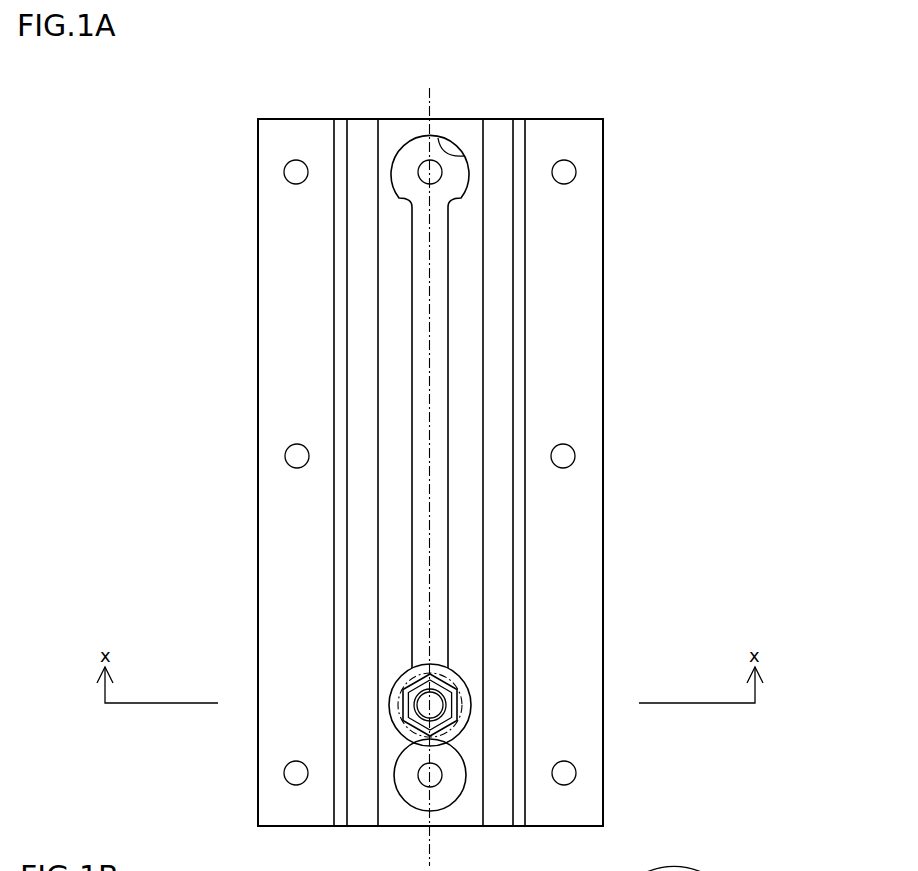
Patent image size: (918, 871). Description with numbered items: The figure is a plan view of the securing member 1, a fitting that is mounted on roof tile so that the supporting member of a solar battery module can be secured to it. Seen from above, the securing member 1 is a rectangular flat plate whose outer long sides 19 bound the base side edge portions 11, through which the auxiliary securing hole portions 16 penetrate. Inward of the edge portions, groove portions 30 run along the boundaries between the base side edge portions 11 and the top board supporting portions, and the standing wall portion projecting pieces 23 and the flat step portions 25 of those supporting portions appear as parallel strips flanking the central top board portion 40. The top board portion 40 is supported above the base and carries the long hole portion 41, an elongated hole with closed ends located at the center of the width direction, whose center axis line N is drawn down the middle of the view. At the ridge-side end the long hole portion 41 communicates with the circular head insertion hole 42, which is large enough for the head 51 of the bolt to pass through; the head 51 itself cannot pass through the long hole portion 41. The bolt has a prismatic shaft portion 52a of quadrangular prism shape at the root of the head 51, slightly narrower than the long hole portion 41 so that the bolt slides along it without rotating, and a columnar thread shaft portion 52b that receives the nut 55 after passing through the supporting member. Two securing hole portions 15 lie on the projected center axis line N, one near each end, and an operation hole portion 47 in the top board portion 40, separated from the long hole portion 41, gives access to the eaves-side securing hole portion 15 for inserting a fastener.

The securing member 1 is at (645, 140).
The base side edge portion 11 is at (296, 316).
The securing hole portion 15 is at (420, 168).
The auxiliary securing hole portion 16 is at (285, 452).
The long side 19 is at (257, 380).
The standing wall portion projecting piece 23 is at (522, 528).
The step portion 25 is at (487, 365).
The groove portion 30 is at (747, 870).
The top board portion 40 is at (458, 295).
The long hole portion 41 is at (413, 592).
The head insertion hole 42 is at (437, 138).
The operation hole portion 47 is at (413, 797).
The head 51 is at (463, 675).
The prismatic shaft portion 52a is at (473, 690).
The thread shaft portion 52b is at (440, 703).
The nut 55 is at (397, 710).
The center axis line N is at (428, 465).